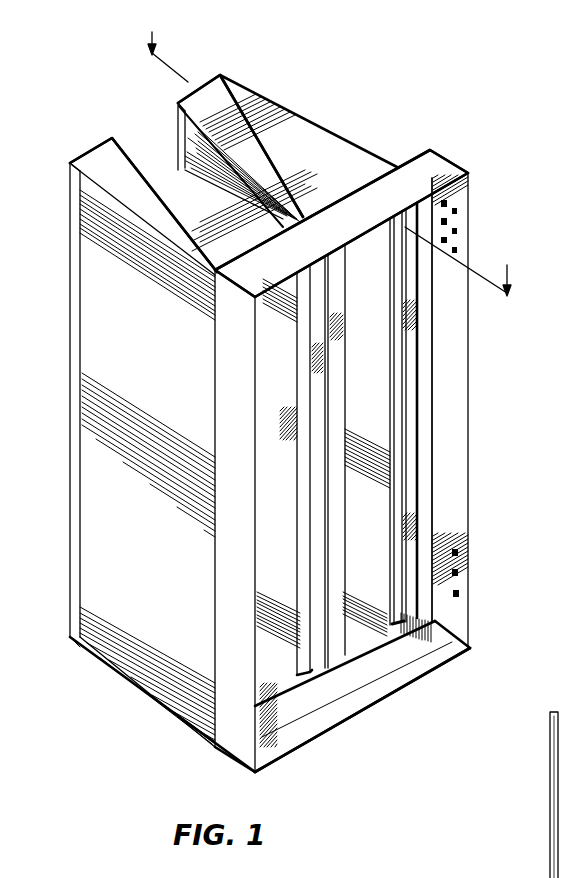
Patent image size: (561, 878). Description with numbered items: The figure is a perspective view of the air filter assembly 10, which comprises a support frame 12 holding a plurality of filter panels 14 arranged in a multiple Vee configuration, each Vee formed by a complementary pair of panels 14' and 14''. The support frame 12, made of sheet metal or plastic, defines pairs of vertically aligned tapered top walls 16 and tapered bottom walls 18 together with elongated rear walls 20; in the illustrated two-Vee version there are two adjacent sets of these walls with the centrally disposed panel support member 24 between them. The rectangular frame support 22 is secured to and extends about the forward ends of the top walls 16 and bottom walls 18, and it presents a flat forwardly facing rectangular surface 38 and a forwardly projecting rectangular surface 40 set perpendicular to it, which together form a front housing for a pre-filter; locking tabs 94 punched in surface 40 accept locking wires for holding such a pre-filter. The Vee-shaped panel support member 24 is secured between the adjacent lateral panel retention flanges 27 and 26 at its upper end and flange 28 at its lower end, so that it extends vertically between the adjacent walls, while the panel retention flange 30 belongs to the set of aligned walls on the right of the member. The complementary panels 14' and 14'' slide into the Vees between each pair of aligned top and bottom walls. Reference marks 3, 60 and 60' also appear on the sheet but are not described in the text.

The section line 3- 3 is at (327, 153).
The filter assembly 10 is at (350, 97).
The support frame 12 is at (445, 152).
The filter panels 14 is at (428, 407).
The filter panel 14' is at (273, 695).
The filter panel 14'' is at (410, 689).
The tapered top walls 16 is at (262, 116).
The tapered bottom walls 18 is at (262, 697).
The elongated rear walls 20 is at (70, 190).
The rectangular frame support 22 is at (427, 320).
The panel support member 24 is at (310, 303).
The lateral panel retention flange 26 is at (84, 136).
The lateral panel retention flange 27 is at (340, 135).
The lateral panel retention flange 28 is at (125, 667).
The panel retention flange 30 is at (78, 222).
The flat forwardly facing rectangular surface 38 is at (292, 700).
The forwardly projecting rectangular surface 40 is at (462, 480).
The rod 60 is at (527, 789).
The rod end 60' is at (525, 797).
The locking tabs 94 is at (460, 232).